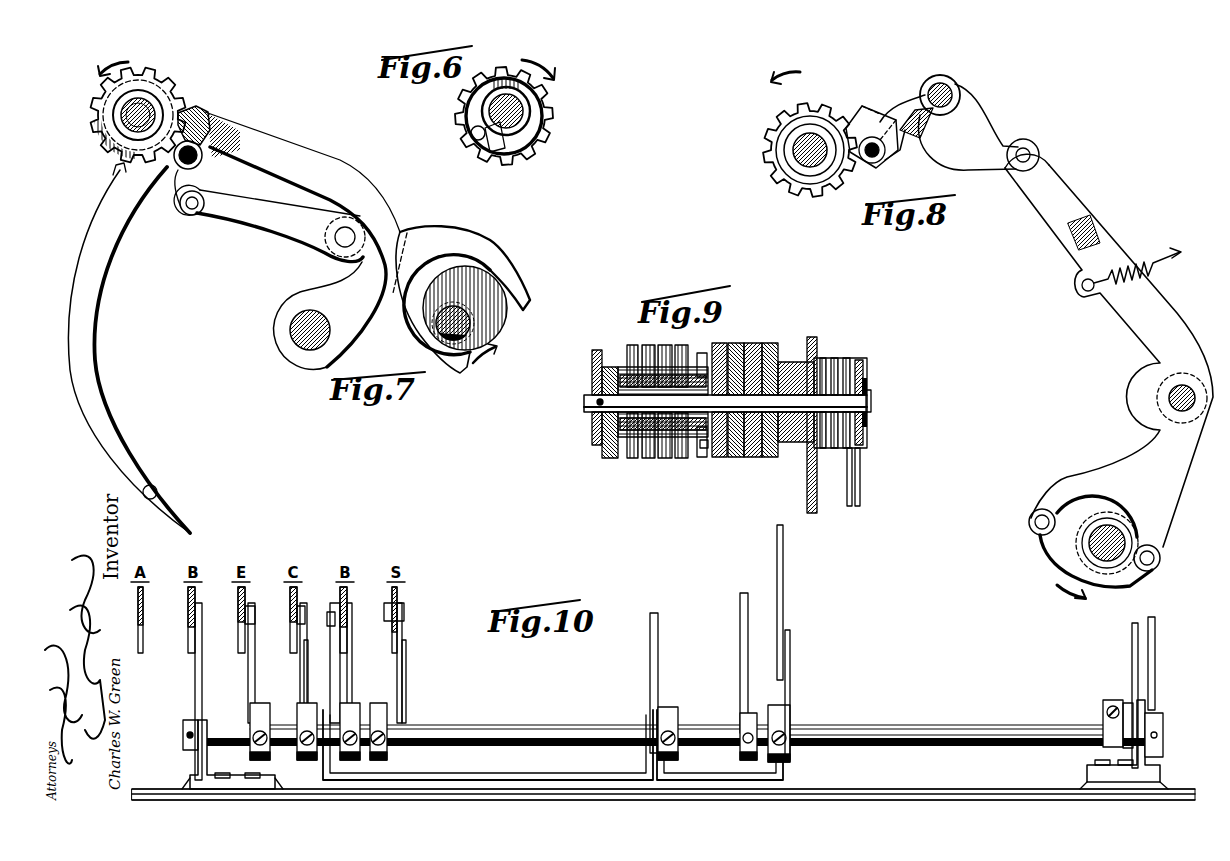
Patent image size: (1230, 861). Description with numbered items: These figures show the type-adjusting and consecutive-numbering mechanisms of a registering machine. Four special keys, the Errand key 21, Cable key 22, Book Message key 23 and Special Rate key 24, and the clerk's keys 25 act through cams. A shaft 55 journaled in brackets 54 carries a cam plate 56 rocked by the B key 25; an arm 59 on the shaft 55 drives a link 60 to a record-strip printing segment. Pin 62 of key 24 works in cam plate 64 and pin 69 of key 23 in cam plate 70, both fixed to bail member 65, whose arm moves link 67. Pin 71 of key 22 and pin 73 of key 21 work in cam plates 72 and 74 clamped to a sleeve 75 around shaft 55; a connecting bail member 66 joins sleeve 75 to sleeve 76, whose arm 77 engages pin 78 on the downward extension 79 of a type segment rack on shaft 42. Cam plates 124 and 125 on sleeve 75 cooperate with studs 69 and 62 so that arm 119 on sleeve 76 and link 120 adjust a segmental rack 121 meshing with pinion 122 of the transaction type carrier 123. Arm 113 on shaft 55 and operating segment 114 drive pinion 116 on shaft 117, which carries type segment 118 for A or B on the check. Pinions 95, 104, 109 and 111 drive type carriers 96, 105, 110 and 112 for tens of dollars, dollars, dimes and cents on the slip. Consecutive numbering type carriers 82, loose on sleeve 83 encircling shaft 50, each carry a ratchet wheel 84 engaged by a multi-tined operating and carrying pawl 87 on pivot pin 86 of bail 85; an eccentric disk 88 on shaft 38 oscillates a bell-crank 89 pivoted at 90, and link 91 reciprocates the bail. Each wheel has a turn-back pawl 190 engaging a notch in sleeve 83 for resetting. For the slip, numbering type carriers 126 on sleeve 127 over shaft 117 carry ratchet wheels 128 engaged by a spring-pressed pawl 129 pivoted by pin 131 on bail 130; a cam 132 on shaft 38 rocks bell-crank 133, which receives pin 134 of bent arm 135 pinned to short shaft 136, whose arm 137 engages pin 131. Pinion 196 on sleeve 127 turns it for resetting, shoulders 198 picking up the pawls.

In FIG. 10, the Errand key 21 is at (245, 598).
In FIG. 10, the Cable key 22 is at (297, 598).
In FIG. 10, the Book Message key 23 is at (347, 600).
In FIG. 10, the Special Rate key 24 is at (400, 592).
In FIG. 10, the clerk's key 25 is at (152, 620).
In FIG. 7, the driving shaft 38 is at (473, 325).
In FIG. 8, the driving shaft 38 is at (1090, 556).
In FIG. 10, the driving shaft 38 is at (197, 622).
In FIG. 7, the shaft 42 is at (331, 339).
In FIG. 7, the shaft 50 is at (118, 120).
In FIG. 10, the bracket 54 is at (205, 722).
In FIG. 10, the shaft 55 is at (218, 746).
In FIG. 10, the cam plate 56 is at (202, 680).
In FIG. 10, the arm 59 is at (740, 712).
In FIG. 10, the link 60 is at (742, 640).
In FIG. 10, the pin 62 is at (404, 612).
In FIG. 10, the cam plate 64 is at (403, 660).
In FIG. 10, the bail member 65 is at (488, 745).
In FIG. 10, the connecting bail member 66 is at (712, 760).
In FIG. 10, the link 67 is at (658, 676).
In FIG. 10, the pin 69 is at (312, 610).
In FIG. 10, the cam plate 70 is at (336, 668).
In FIG. 10, the pin 71 is at (305, 620).
In FIG. 10, the cam plate 72 is at (303, 688).
In FIG. 10, the pin 73 is at (255, 616).
In FIG. 10, the cam plate 74 is at (255, 680).
In FIG. 10, the sleeve 75 is at (430, 726).
In FIG. 10, the sleeve 76 is at (840, 726).
In FIG. 10, the arm 77 is at (790, 664).
In FIG. 7, the pin 78 is at (157, 491).
In FIG. 7, the downward extension 79 is at (85, 317).
In FIG. 10, the downward extension 79 is at (783, 567).
In FIG. 7, the consecutive numbering type carrier 82 is at (160, 86).
In FIG. 6, the consecutive numbering type carrier 82 is at (546, 130).
In FIG. 7, the sleeve 83 is at (152, 113).
In FIG. 6, the sleeve 83 is at (523, 109).
In FIG. 7, the ratchet wheel 84 is at (148, 95).
In FIG. 7, the bail 85 is at (198, 162).
In FIG. 7, the pivot pin 86 is at (232, 130).
In FIG. 7, the operating and carrying pawl 87 is at (202, 114).
In FIG. 7, the eccentrically mounted disk 88 is at (487, 280).
In FIG. 7, the bell-crank 89 is at (268, 223).
In FIG. 7, the pivot 90 is at (336, 240).
In FIG. 7, the link 91 is at (180, 203).
In FIG. 9, the pinion 95 is at (868, 375).
In FIG. 9, the type carrier 96 is at (718, 343).
In FIG. 9, the pinion 104 is at (864, 362).
In FIG. 9, the type carrier 105 is at (740, 343).
In FIG. 9, the pinion 109 is at (848, 358).
In FIG. 9, the type carrier 110 is at (762, 343).
In FIG. 9, the pinion 111 is at (822, 360).
In FIG. 9, the type carrier 112 is at (792, 343).
In FIG. 10, the arm 113 is at (1156, 700).
In FIG. 9, the operating segment 114 is at (860, 490).
In FIG. 9, the pinion 116 is at (860, 400).
In FIG. 8, the shaft 117 is at (793, 152).
In FIG. 9, the shaft 117 is at (593, 398).
In FIG. 9, the type segment 118 is at (608, 455).
In FIG. 10, the type segment 118 is at (1108, 720).
In FIG. 10, the arm 119 is at (1128, 703).
In FIG. 10, the link 120 is at (1132, 645).
In FIG. 9, the segmental rack 121 is at (825, 490).
In FIG. 9, the pinion 122 is at (870, 390).
In FIG. 9, the type carrier 123 is at (704, 455).
In FIG. 10, the cam plate 124 is at (340, 690).
In FIG. 10, the cam plate 125 is at (406, 684).
In FIG. 8, the consecutive numbering type carrier 126 is at (790, 190).
In FIG. 9, the consecutive numbering type carrier 126 is at (672, 347).
In FIG. 8, the sleeve 127 is at (796, 140).
In FIG. 9, the sleeve 127 is at (622, 372).
In FIG. 8, the ratchet wheel 128 is at (845, 122).
In FIG. 8, the operating and carrying pawl 129 is at (876, 105).
In FIG. 8, the bail 130 is at (898, 155).
In FIG. 8, the pin 131 is at (875, 158).
In FIG. 8, the cam 132 is at (1080, 550).
In FIG. 8, the bell-crank 133 is at (1109, 376).
In FIG. 8, the pin 134 is at (1015, 150).
In FIG. 8, the bent arm 135 is at (968, 127).
In FIG. 8, the short shaft 136 is at (955, 97).
In FIG. 8, the arm 137 is at (910, 112).
In FIG. 6, the resetting pawl 190 is at (496, 140).
In FIG. 9, the pinion 196 is at (700, 448).
In FIG. 8, the shoulder 198 is at (815, 185).